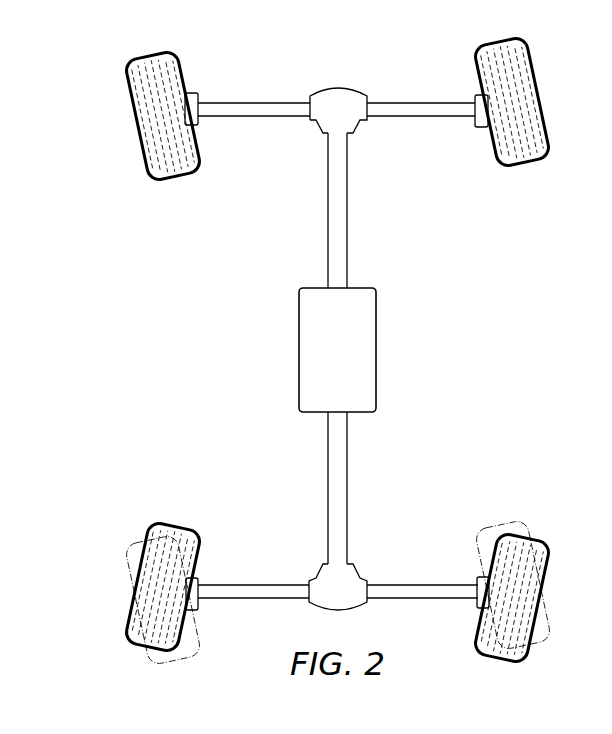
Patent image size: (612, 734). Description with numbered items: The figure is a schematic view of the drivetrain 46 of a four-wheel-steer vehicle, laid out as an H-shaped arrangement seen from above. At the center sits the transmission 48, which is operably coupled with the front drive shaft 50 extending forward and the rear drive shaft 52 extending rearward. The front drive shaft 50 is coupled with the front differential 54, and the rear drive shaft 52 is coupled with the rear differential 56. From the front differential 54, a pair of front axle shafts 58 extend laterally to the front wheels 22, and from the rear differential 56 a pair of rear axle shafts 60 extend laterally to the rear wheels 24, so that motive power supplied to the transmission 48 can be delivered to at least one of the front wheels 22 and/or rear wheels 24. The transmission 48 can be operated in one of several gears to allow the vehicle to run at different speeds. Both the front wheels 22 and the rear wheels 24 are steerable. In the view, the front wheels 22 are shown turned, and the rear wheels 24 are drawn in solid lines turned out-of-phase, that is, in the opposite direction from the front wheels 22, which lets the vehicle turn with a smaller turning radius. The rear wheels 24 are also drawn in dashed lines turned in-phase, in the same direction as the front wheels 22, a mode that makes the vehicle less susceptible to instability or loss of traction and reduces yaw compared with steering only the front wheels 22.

The front wheels 22 is at (136, 58).
The rear wheels 24 is at (125, 627).
The drivetrain 46 is at (100, 242).
The transmission 48 is at (300, 338).
The front drive shaft 50 is at (327, 213).
The rear drive shaft 52 is at (348, 488).
The front differential 54 is at (343, 88).
The rear differential 56 is at (350, 607).
The front axle shafts 58 is at (260, 102).
The rear axle shafts 60 is at (250, 600).